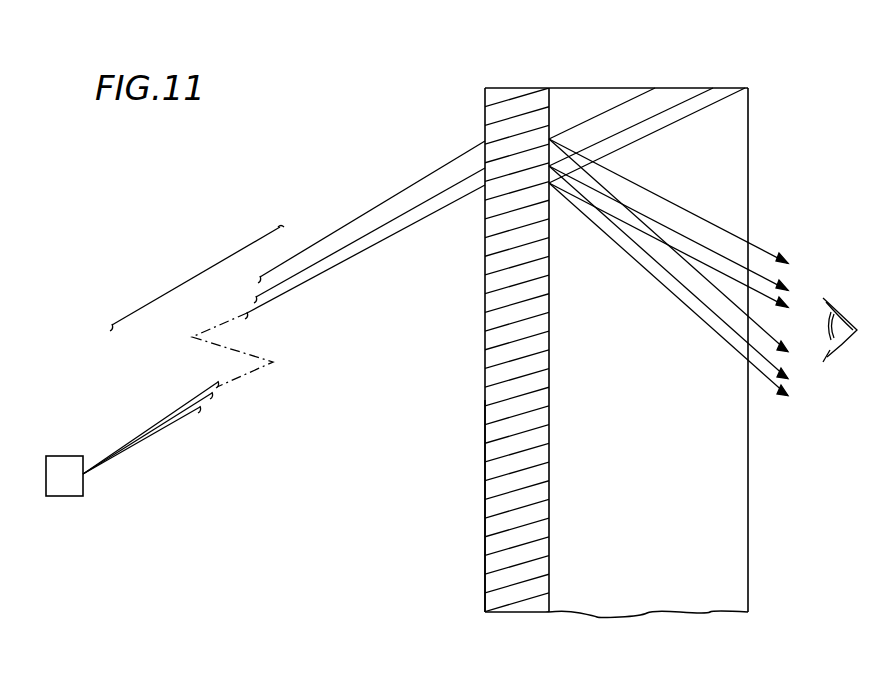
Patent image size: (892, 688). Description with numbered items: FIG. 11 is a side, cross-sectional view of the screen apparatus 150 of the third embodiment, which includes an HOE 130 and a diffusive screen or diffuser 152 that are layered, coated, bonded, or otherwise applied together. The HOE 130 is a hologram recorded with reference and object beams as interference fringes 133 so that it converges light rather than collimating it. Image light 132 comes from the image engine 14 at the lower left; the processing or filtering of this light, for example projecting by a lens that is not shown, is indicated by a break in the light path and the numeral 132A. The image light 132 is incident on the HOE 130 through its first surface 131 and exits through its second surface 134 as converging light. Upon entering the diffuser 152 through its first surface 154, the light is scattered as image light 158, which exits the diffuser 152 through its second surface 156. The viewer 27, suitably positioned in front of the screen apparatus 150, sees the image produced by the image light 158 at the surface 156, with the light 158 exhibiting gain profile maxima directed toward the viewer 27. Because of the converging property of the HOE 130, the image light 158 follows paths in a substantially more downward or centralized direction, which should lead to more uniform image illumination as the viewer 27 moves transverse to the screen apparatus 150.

The image engine 14 is at (70, 485).
The viewer 27 is at (831, 297).
The HOE 130 is at (482, 368).
The first surface 131 is at (482, 576).
The image light 132 is at (385, 186).
The break in the light path 132A is at (200, 272).
The interference fringes 133 is at (508, 608).
The second surface 134 is at (550, 583).
The screen apparatus 150 is at (477, 64).
The diffuser 152 is at (688, 88).
The first surface 154 is at (551, 100).
The second surface 156 is at (750, 568).
The image light 158 is at (656, 305).